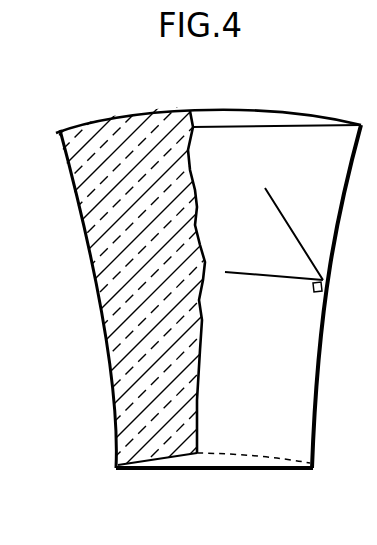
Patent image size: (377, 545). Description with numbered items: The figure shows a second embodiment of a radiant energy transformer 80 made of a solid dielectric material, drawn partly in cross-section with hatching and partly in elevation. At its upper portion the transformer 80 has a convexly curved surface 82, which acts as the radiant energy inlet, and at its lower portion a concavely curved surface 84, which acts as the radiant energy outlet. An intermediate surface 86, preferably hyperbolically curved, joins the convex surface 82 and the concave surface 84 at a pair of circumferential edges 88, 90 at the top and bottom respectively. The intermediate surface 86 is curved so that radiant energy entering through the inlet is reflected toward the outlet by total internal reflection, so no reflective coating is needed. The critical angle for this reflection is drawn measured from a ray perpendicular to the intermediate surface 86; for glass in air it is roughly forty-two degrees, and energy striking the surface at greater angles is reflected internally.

The radiant energy transformer 80 is at (80, 102).
The convexly curved surface 82 is at (140, 112).
The concavely curved surface 84 is at (162, 473).
The intermediate surface 86 is at (97, 270).
The circumferential edge 88 is at (362, 123).
The circumferential edge 90 is at (312, 471).